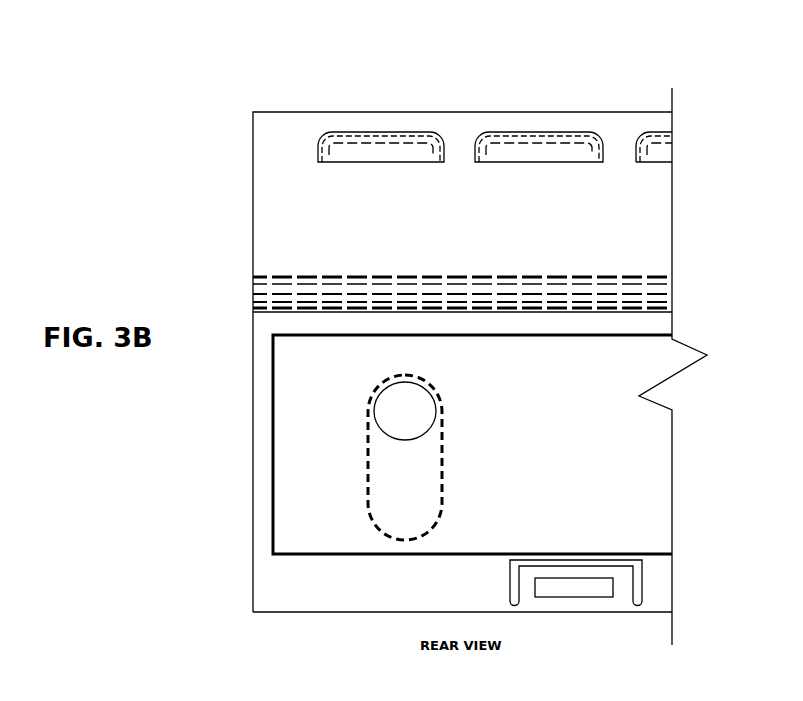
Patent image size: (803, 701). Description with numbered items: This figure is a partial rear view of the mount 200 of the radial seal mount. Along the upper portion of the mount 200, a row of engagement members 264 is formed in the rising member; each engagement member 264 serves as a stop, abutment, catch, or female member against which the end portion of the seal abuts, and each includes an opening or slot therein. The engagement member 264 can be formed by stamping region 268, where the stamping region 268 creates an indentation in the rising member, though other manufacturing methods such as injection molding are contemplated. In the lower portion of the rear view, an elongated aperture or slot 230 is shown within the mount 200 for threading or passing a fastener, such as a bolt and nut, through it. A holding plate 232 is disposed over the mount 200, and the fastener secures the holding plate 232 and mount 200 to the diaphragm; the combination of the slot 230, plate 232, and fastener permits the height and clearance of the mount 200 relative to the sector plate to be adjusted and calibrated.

The mount 200 is at (213, 215).
The stamping region 268 is at (353, 158).
The engagement member 264 is at (411, 133).
The holding plate 232 is at (318, 459).
The slot 230 is at (398, 505).